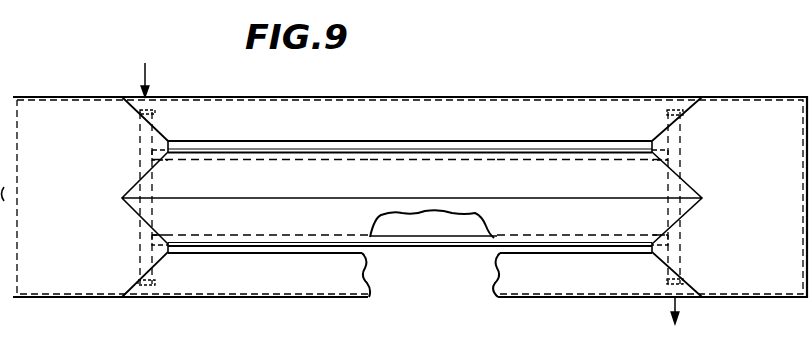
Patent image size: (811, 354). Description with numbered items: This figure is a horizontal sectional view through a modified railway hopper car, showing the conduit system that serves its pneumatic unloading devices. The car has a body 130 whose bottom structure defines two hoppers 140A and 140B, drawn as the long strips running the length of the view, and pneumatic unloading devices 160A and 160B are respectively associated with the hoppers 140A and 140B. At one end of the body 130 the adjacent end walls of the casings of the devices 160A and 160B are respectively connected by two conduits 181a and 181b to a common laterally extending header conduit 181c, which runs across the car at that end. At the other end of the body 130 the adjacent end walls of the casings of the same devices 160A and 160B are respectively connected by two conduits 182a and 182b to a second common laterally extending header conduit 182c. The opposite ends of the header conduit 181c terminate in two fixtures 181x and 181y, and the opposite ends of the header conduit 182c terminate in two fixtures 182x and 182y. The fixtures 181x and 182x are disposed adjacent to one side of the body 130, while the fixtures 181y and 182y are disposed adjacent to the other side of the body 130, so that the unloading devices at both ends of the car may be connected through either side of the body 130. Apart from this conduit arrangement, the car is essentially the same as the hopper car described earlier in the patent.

The body 130 is at (367, 96).
The hopper 140A is at (283, 253).
The hopper 140B is at (265, 141).
The pneumatic unloading device 160A is at (482, 241).
The pneumatic unloading device 160B is at (582, 159).
The conduit 181a is at (658, 235).
The conduit 181b is at (657, 160).
The header conduit 181c is at (682, 172).
The fixture 181x is at (656, 283).
The fixture 181y is at (665, 113).
The conduit 182a is at (159, 233).
The conduit 182b is at (159, 158).
The header conduit 182c is at (140, 170).
The fixture 182x is at (128, 282).
The fixture 182y is at (157, 113).